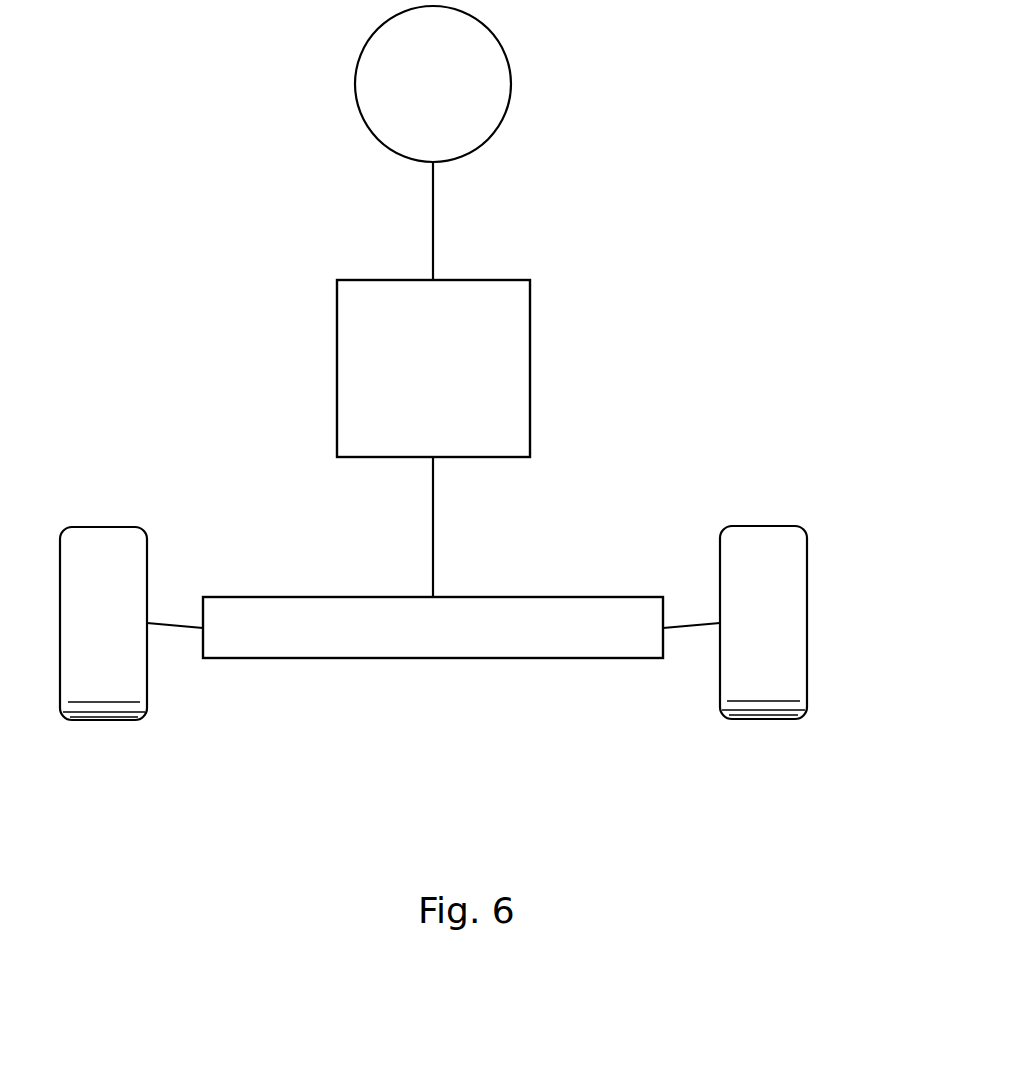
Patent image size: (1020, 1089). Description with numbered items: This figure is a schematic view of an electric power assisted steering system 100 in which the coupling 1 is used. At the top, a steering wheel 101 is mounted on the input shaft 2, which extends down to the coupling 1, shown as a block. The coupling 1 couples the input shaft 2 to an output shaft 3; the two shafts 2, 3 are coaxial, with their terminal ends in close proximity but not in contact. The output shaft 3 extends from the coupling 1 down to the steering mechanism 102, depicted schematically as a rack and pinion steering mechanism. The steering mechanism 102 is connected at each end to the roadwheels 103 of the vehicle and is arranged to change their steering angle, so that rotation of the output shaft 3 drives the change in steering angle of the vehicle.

The electric power assisted steering system 100 is at (660, 210).
The steering wheel 101 is at (512, 82).
The steering mechanism 102 is at (400, 650).
The roadwheels 103 is at (110, 527).
The coupling 1 is at (530, 386).
The input shaft 2 is at (434, 238).
The output shaft 3 is at (434, 553).